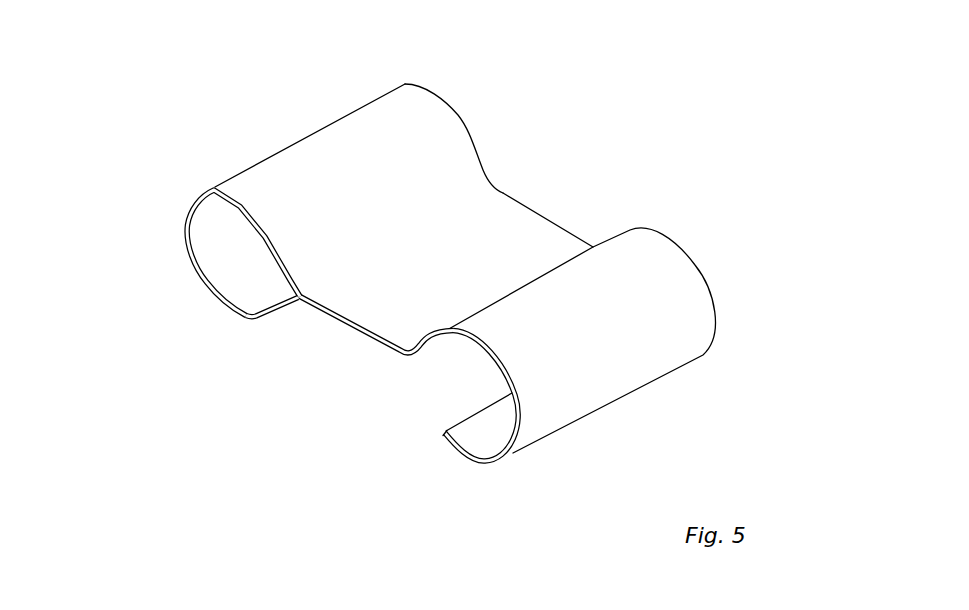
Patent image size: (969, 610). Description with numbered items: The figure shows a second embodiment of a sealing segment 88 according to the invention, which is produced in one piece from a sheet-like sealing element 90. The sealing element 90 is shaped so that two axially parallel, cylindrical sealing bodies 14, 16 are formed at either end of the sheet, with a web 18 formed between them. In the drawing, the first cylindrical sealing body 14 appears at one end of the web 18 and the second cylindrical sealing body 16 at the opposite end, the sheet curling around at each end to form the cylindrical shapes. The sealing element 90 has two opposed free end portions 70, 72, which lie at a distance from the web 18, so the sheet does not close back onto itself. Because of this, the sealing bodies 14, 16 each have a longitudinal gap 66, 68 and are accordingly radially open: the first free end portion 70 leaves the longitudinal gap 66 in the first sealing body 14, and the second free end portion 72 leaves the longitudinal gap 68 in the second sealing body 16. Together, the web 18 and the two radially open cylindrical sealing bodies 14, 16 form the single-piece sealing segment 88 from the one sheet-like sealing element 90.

The sealing segment 88 is at (402, 247).
The cylindrical sealing body 14 is at (405, 127).
The sheet-like sealing element 90 is at (512, 173).
The web 18 is at (492, 235).
The cylindrical sealing body 16 is at (610, 271).
The longitudinal gap 66 is at (266, 300).
The free end portion 70 is at (250, 321).
The longitudinal gap 68 is at (441, 391).
The free end portion 72 is at (473, 423).